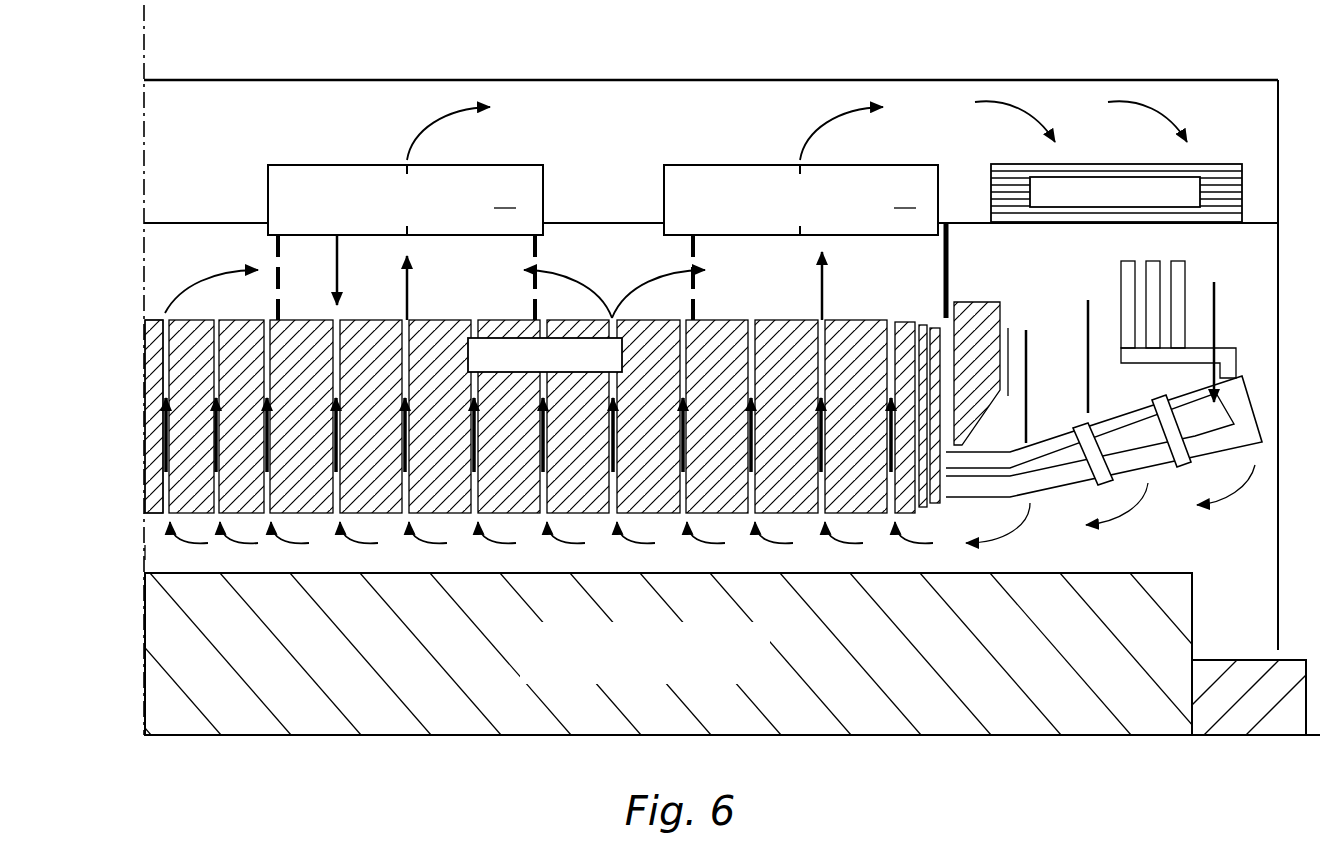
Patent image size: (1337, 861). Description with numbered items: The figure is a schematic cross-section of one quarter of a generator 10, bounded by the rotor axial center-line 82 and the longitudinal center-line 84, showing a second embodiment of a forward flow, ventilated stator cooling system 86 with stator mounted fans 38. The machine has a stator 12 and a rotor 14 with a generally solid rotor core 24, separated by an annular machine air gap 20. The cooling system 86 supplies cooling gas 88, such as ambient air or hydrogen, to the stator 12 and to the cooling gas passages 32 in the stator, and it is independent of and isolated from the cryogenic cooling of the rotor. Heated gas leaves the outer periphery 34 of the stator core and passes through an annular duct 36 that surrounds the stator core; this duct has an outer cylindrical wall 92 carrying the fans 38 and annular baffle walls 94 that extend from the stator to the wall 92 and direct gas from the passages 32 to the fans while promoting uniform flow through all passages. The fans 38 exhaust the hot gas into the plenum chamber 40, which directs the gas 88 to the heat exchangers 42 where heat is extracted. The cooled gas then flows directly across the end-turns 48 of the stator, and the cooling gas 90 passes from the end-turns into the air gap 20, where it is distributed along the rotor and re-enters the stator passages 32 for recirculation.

The machine 10 is at (1324, 268).
The stator 12 is at (142, 469).
The rotor 14 is at (633, 681).
The machine air gap 20 is at (142, 546).
The rotor core 24 is at (348, 710).
The cooling gas passages 32 is at (163, 364).
The outer periphery 34 is at (862, 320).
The annular ducts 36 is at (616, 243).
The stator mounted fans 38 is at (603, 200).
The plenum chamber 40 is at (676, 103).
The heat exchanger 42 is at (1222, 175).
The end-turns 48 is at (1237, 413).
The rotor axial center-line 82 is at (998, 736).
The longitudinal center-line 84 is at (142, 649).
The ventilated stator cooling system 86 is at (140, 269).
The cooling gas 88 is at (407, 121).
The cooling gas 90 is at (1146, 498).
The outer cylindrical wall 92 is at (211, 222).
The annular baffle walls 94 is at (276, 301).